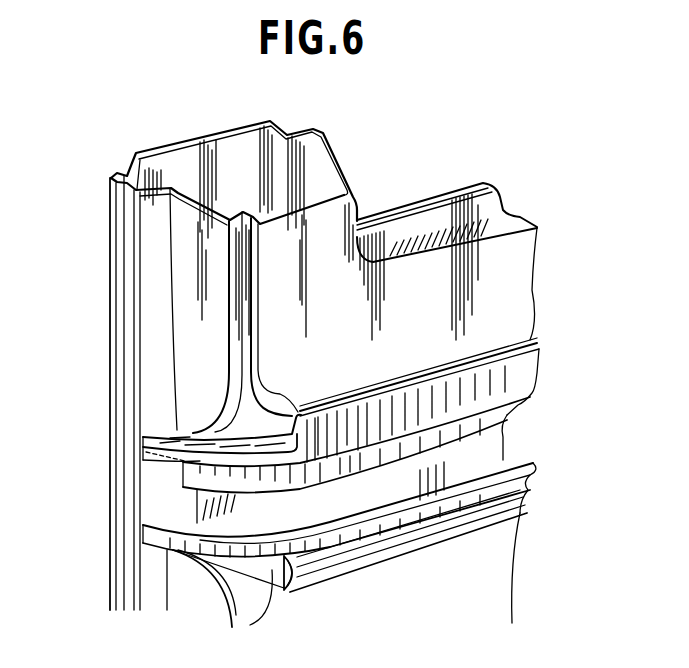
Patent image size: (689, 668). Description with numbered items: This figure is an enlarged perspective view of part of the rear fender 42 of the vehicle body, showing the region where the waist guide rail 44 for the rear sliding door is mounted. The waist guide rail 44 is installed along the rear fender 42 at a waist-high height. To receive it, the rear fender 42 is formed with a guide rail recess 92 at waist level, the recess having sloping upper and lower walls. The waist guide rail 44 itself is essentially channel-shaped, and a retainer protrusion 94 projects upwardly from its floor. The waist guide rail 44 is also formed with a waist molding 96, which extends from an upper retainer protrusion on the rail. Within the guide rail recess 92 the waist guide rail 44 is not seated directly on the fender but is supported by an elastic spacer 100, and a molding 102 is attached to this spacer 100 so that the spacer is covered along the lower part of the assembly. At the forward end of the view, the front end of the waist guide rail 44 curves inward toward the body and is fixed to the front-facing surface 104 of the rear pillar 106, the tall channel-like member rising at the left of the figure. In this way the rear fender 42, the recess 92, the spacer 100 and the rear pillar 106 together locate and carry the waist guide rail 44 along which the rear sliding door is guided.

The rear fender 42 is at (522, 263).
The waist guide rail 44 is at (507, 415).
The guide rail recess 92 is at (525, 340).
The retainer protrusion 94 is at (533, 470).
The waist molding 96 is at (525, 373).
The elastic spacer 100 is at (273, 572).
The molding 102 is at (383, 545).
The front-facing surface 104 is at (182, 322).
The rear pillar 106 is at (207, 140).